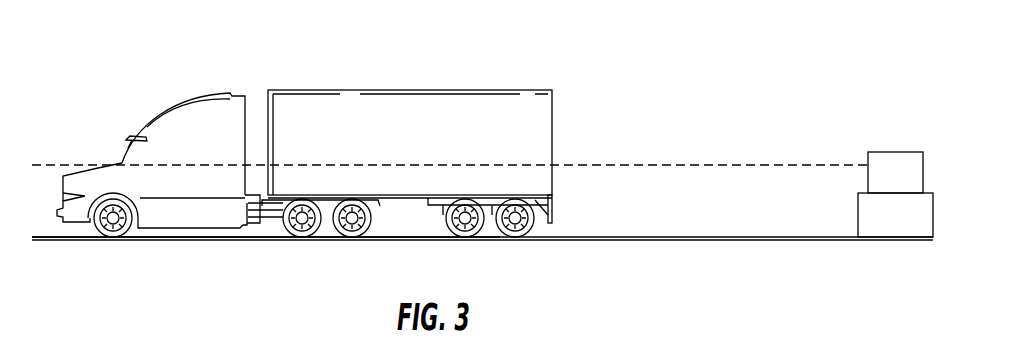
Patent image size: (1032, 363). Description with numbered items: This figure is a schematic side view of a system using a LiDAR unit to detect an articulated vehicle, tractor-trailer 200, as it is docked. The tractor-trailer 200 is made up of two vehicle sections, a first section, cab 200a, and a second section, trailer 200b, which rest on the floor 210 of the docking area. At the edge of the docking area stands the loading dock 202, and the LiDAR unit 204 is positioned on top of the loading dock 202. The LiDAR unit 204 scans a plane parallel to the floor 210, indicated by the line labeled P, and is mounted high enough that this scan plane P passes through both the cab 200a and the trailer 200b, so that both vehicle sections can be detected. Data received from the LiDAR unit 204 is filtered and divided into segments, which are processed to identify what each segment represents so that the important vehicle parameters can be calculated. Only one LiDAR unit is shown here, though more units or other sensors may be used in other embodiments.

The tractor-trailer 200 is at (118, 104).
The cab 200a is at (217, 90).
The trailer 200b is at (332, 90).
The scan plane P is at (680, 162).
The floor 210 is at (158, 238).
The loading dock 202 is at (880, 230).
The LiDAR unit 204 is at (893, 152).